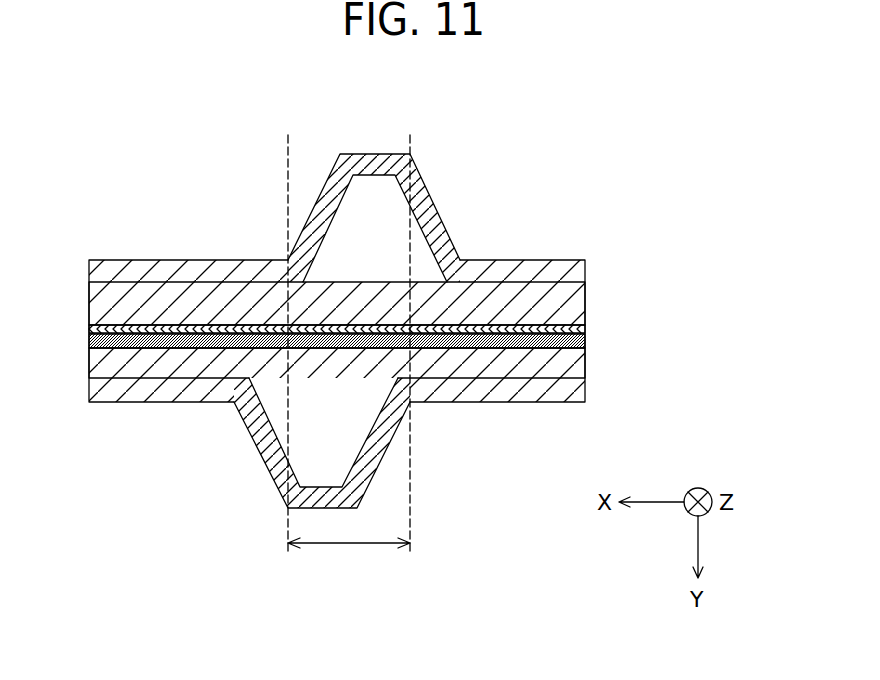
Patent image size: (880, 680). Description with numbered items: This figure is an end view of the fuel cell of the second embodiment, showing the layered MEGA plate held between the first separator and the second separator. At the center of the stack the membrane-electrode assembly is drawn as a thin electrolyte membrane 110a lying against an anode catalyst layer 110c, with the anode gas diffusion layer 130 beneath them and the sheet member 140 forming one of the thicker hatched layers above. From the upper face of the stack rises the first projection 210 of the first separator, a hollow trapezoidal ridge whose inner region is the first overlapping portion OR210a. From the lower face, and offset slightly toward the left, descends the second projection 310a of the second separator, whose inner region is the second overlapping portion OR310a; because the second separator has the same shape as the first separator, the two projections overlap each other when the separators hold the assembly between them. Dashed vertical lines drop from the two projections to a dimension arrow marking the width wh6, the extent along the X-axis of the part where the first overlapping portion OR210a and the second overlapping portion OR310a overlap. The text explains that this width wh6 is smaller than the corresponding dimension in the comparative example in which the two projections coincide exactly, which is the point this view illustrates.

The sheet member 140 is at (537, 316).
The electrolyte membrane 110a is at (582, 332).
The anode catalyst layer 110c is at (582, 343).
The anode gas diffusion layer 130 is at (552, 357).
The first projection 210 is at (430, 213).
The first overlapping portion OR210a is at (355, 232).
The second projection 310a is at (265, 447).
The second overlapping portion OR310a is at (335, 460).
The width of the overlapping part wh6 is at (336, 546).